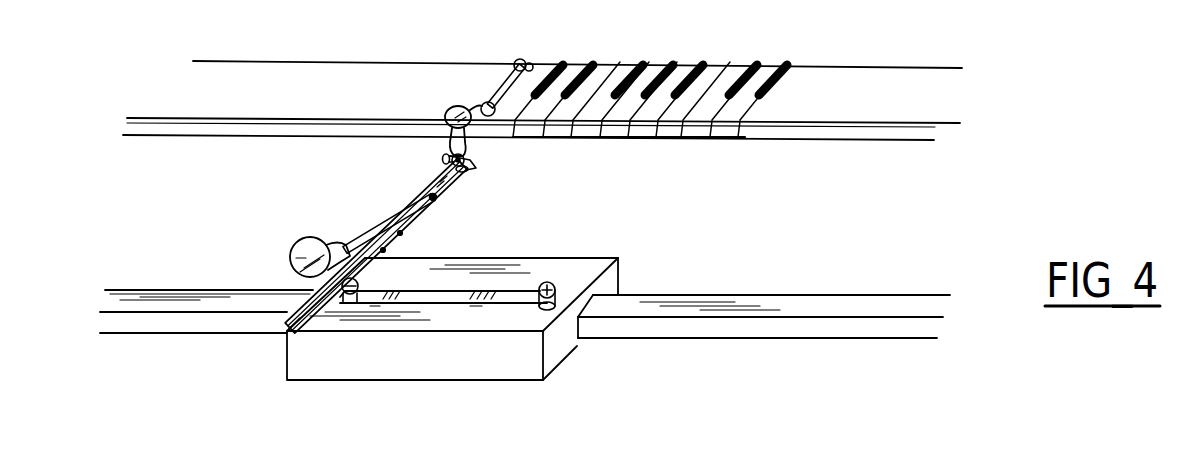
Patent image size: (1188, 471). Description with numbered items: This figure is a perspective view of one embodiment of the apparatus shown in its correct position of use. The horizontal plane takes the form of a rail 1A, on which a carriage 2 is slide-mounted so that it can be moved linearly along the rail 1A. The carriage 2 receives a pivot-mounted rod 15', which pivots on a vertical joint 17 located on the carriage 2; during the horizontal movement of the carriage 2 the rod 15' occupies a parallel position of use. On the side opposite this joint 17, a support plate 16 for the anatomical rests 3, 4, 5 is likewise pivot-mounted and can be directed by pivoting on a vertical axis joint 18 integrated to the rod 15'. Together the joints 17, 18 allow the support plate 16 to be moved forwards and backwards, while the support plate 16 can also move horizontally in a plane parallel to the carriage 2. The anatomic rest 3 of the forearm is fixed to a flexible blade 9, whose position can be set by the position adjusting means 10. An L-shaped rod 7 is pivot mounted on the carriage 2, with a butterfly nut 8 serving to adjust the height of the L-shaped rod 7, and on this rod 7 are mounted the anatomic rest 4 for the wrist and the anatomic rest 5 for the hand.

The rail 1A is at (770, 300).
The carriage 2 is at (590, 266).
The anatomic rest of the forearm 3 is at (296, 246).
The anatomic rest for the wrist 4 is at (451, 105).
The anatomic rest for the hand 5 is at (522, 60).
The L-shaped rod 7 is at (470, 156).
The butterfly nut 8 is at (440, 158).
The flexible blade 9 is at (378, 224).
The position adjusting means 10 is at (446, 212).
The pivot-mounted rod 15' is at (443, 355).
The support plate 16 is at (478, 167).
The vertical joint 17 is at (557, 303).
The vertical axis joint 18 is at (316, 333).